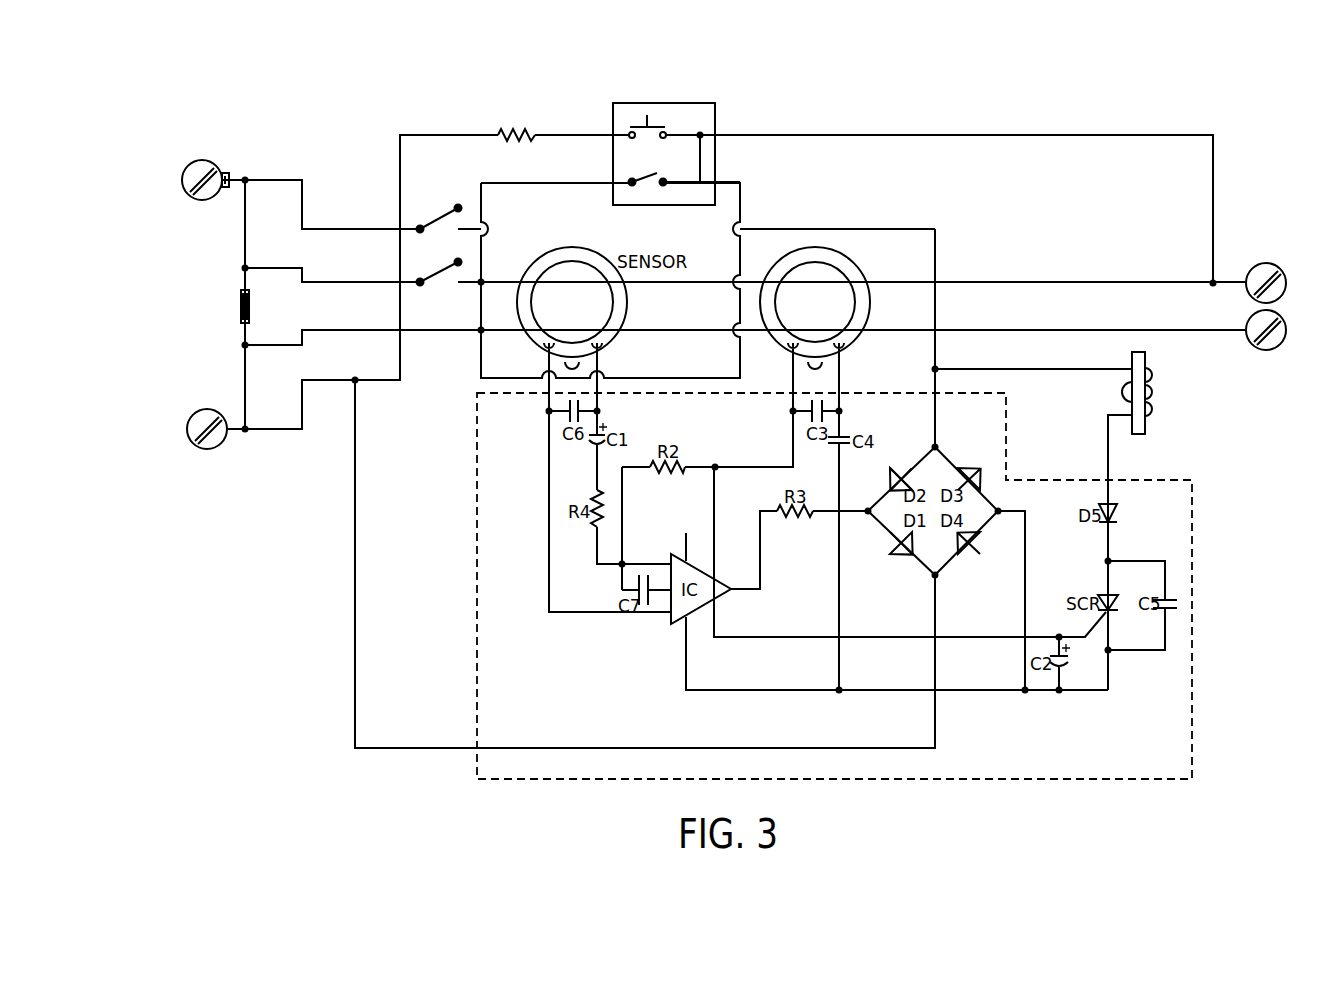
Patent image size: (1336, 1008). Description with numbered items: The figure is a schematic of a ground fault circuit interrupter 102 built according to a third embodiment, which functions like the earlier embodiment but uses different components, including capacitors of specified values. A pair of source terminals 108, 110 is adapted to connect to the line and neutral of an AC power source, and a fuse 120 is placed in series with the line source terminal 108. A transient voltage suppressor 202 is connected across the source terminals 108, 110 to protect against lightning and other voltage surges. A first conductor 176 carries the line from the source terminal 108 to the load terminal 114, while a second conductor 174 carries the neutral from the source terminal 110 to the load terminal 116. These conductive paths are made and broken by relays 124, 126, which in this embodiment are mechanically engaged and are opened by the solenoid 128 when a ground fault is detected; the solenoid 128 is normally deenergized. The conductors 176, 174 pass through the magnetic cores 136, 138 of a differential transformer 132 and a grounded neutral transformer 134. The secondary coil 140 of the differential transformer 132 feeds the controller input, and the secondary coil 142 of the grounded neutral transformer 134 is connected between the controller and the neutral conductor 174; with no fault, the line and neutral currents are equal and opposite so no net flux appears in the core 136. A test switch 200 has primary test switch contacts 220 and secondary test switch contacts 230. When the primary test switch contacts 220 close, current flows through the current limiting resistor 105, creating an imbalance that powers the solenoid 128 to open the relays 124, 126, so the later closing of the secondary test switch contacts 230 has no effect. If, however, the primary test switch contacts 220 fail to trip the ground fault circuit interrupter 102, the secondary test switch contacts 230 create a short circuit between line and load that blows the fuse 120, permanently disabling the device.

The ground fault circuit interrupter 102 is at (300, 826).
The current limiting resistor 105 is at (512, 135).
The source terminal 108 is at (182, 183).
The source terminal 110 is at (187, 431).
The load terminal 114 is at (1286, 283).
The load terminal 116 is at (1286, 330).
The fuse 120 is at (228, 172).
The relay 124 is at (420, 233).
The relay 126 is at (420, 286).
The solenoid 128 is at (1148, 418).
The differential transformer 132 is at (592, 329).
The grounded neutral transformer 134 is at (836, 329).
The magnetic core 136 is at (535, 304).
The magnetic core 138 is at (778, 304).
The secondary coil 140 is at (557, 338).
The secondary coil 142 is at (800, 338).
The second conductor 174 is at (330, 330).
The first conductor 176 is at (328, 232).
The test switch 200 is at (676, 141).
The transient voltage suppressor 202 is at (236, 308).
The primary test switch contacts 220 is at (658, 132).
The secondary test switch contacts 230 is at (658, 180).